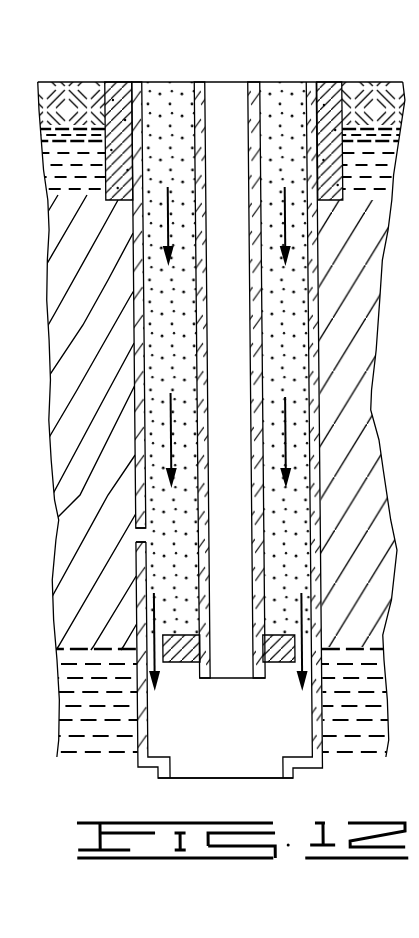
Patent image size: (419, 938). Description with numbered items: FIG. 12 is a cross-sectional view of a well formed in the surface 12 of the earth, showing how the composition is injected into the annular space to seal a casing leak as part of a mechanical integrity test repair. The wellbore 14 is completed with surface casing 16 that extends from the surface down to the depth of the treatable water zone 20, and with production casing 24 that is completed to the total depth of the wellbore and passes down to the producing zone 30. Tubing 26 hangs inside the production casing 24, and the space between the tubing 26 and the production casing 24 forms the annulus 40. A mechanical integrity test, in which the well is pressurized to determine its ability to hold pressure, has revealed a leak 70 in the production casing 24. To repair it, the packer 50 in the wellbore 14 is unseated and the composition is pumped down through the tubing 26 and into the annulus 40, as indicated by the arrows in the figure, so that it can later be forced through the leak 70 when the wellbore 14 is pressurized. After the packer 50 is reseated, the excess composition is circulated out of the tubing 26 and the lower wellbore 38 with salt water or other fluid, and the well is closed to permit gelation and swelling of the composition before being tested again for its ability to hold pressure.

The surface of the earth 12 is at (0, 140).
The wellbore 14 is at (150, 115).
The surface casing 16 is at (101, 200).
The treatable water zone 20 is at (48, 163).
The production casing 24 is at (130, 310).
The tubing 26 is at (258, 108).
The producing zone 30 is at (42, 688).
The lower wellbore 38 is at (218, 778).
The annulus 40 is at (148, 417).
The packer 50 is at (271, 663).
The leak 70 is at (132, 537).